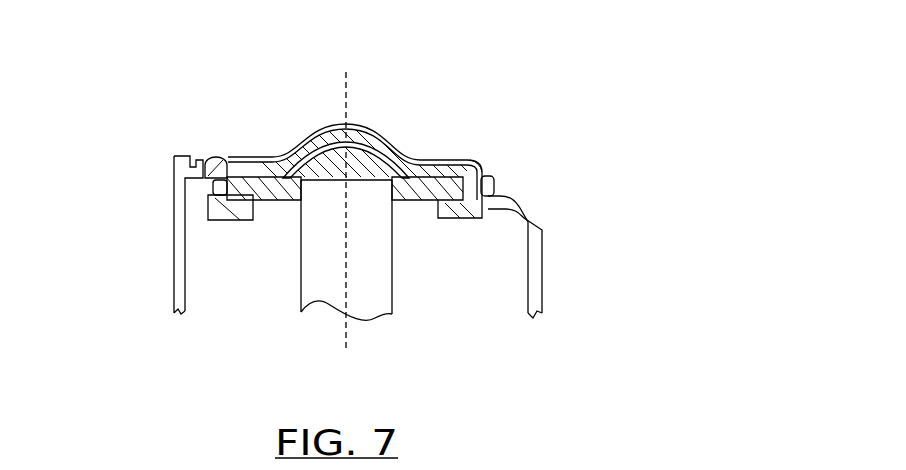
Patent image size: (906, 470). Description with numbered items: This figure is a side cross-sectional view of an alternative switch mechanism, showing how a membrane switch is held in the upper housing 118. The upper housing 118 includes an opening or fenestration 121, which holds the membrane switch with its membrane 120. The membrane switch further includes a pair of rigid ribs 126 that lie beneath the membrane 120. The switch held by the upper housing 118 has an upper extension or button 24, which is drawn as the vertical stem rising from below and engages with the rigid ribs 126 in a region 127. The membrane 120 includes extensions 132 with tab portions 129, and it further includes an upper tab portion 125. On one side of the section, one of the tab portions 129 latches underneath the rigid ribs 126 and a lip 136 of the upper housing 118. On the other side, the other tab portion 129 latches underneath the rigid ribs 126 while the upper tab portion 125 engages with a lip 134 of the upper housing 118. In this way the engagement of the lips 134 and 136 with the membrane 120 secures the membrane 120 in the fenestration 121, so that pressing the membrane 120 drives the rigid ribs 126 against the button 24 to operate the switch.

The button 24 is at (323, 290).
The upper housing 118 is at (535, 295).
The membrane 120 is at (418, 152).
The fenestration 121 is at (476, 192).
The upper tab portion 125 is at (218, 157).
The rigid ribs 126 is at (368, 152).
The region 127 is at (322, 150).
The tab portions 129 is at (230, 222).
The extensions 132 is at (217, 190).
The lip 134 is at (186, 155).
The lip 136 is at (486, 172).